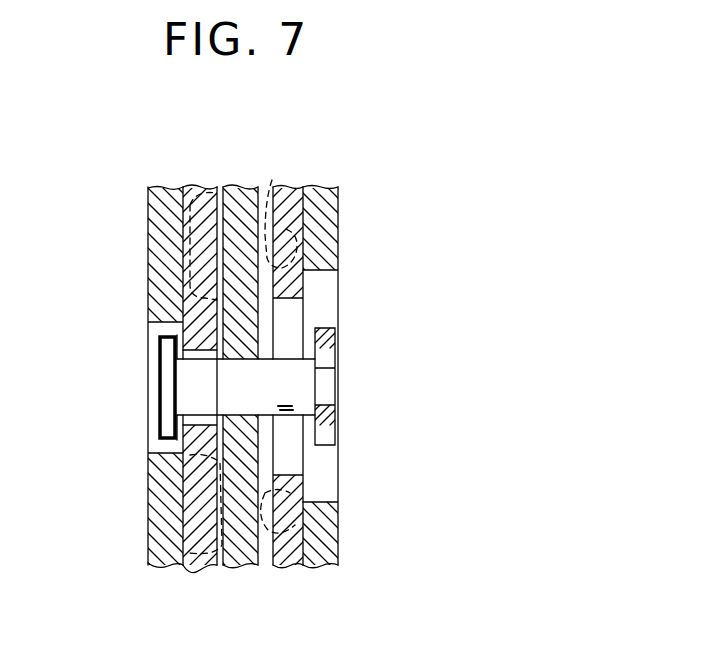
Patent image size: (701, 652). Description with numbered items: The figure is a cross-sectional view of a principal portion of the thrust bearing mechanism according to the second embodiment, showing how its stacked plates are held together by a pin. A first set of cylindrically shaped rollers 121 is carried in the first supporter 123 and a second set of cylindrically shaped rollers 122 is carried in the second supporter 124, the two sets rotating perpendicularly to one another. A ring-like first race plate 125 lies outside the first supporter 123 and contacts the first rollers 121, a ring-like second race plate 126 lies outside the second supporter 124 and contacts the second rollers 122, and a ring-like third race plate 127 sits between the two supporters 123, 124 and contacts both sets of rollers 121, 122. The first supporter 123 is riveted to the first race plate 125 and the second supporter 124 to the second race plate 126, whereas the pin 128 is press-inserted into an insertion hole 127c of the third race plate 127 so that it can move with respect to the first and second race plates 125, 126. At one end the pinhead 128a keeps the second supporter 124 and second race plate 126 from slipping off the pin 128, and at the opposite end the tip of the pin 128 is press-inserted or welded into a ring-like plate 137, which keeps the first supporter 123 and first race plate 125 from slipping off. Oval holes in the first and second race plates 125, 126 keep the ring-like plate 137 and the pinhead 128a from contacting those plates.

The first set of cylindrically shaped rollers 121 is at (272, 180).
The second set of cylindrically shaped rollers 122 is at (221, 187).
The first supporter 123 is at (297, 185).
The second supporter 124 is at (195, 186).
The first race plate 125 is at (325, 212).
The second race plate 126 is at (158, 227).
The third race plate 127 is at (243, 187).
The insertion hole 127c is at (240, 357).
The pin 128 is at (150, 357).
The pinhead 128a is at (160, 398).
The ring-like plate 137 is at (333, 423).